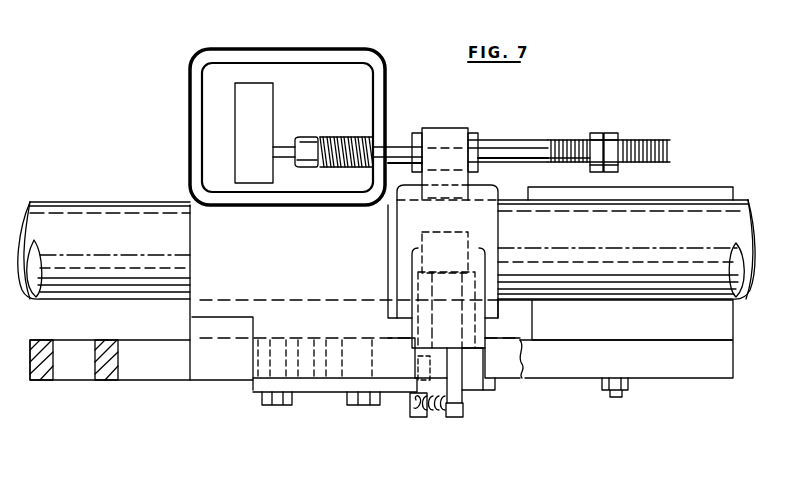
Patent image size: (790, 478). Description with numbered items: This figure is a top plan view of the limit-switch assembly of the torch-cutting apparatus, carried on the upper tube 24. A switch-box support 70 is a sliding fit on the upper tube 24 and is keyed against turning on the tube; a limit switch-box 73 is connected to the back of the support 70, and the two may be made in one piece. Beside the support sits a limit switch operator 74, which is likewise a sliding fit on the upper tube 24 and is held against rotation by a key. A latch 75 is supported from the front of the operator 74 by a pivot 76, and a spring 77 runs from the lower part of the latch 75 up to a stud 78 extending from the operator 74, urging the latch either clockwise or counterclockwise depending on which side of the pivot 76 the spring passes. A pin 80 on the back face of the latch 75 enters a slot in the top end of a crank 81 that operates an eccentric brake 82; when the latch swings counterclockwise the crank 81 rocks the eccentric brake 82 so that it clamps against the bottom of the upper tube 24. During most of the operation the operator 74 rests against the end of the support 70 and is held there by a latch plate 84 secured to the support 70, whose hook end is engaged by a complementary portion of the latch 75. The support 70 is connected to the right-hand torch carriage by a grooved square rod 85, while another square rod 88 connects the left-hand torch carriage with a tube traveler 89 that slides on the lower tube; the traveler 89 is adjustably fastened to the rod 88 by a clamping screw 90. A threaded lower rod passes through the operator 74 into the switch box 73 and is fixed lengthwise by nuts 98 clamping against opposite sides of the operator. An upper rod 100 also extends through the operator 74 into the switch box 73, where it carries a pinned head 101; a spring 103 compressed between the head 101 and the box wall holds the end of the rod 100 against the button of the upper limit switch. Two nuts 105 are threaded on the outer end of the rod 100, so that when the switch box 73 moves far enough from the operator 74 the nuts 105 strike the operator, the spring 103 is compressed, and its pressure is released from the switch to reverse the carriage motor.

The upper tube 24 is at (58, 216).
The switch-box support 70 is at (206, 244).
The limit switch-box 73 is at (194, 113).
The limit switch operator 74 is at (488, 216).
The latch 75 is at (472, 386).
The pivot 76 is at (490, 368).
The spring 77 is at (436, 413).
The stud 78 is at (458, 406).
The pin 80 is at (424, 368).
The crank 81 is at (420, 352).
The eccentric brake 82 is at (462, 246).
The latch plate 84 is at (322, 388).
The square rod 85 is at (130, 370).
The square rod 88 is at (72, 370).
The tube traveler 89 is at (628, 339).
The clamping screw 90 is at (257, 96).
The nuts 98 is at (416, 133).
The upper rod 100 is at (518, 153).
The head 101 is at (306, 140).
The spring 103 is at (334, 140).
The nuts 105 is at (610, 134).